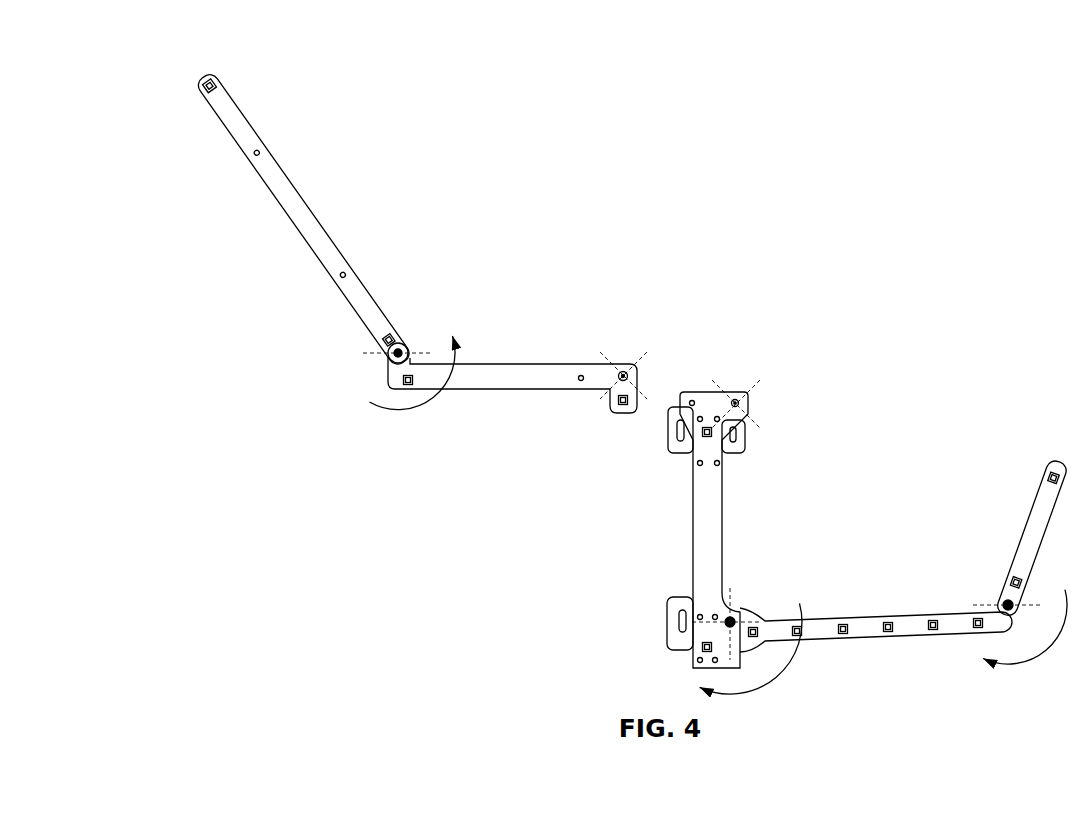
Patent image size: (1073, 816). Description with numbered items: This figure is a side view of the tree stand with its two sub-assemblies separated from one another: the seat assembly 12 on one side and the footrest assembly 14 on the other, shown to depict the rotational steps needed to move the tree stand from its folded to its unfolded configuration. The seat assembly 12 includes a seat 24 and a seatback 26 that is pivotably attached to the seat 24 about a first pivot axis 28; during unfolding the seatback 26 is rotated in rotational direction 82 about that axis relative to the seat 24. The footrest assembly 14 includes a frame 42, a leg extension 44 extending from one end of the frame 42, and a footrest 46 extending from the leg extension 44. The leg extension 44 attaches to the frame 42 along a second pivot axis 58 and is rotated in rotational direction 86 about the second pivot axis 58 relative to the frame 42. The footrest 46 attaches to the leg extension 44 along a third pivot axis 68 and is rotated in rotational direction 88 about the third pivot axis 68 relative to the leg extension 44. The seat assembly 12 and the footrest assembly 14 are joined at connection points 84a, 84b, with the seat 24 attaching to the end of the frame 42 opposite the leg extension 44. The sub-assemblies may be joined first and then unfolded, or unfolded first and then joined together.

The seat assembly 12 is at (477, 218).
The footrest assembly 14 is at (947, 375).
The seat 24 is at (523, 389).
The seatback 26 is at (297, 188).
The first pivot axis 28 is at (395, 355).
The frame 42 is at (700, 496).
The leg extension 44 is at (907, 640).
The footrest 46 is at (1037, 517).
The second pivot axis 58 is at (738, 613).
The third pivot axis 68 is at (1005, 600).
The rotational direction 82 is at (422, 407).
The connection point 84a is at (623, 371).
The connection point 84b is at (736, 398).
The rotational direction 86 is at (776, 672).
The rotational direction 88 is at (1045, 650).